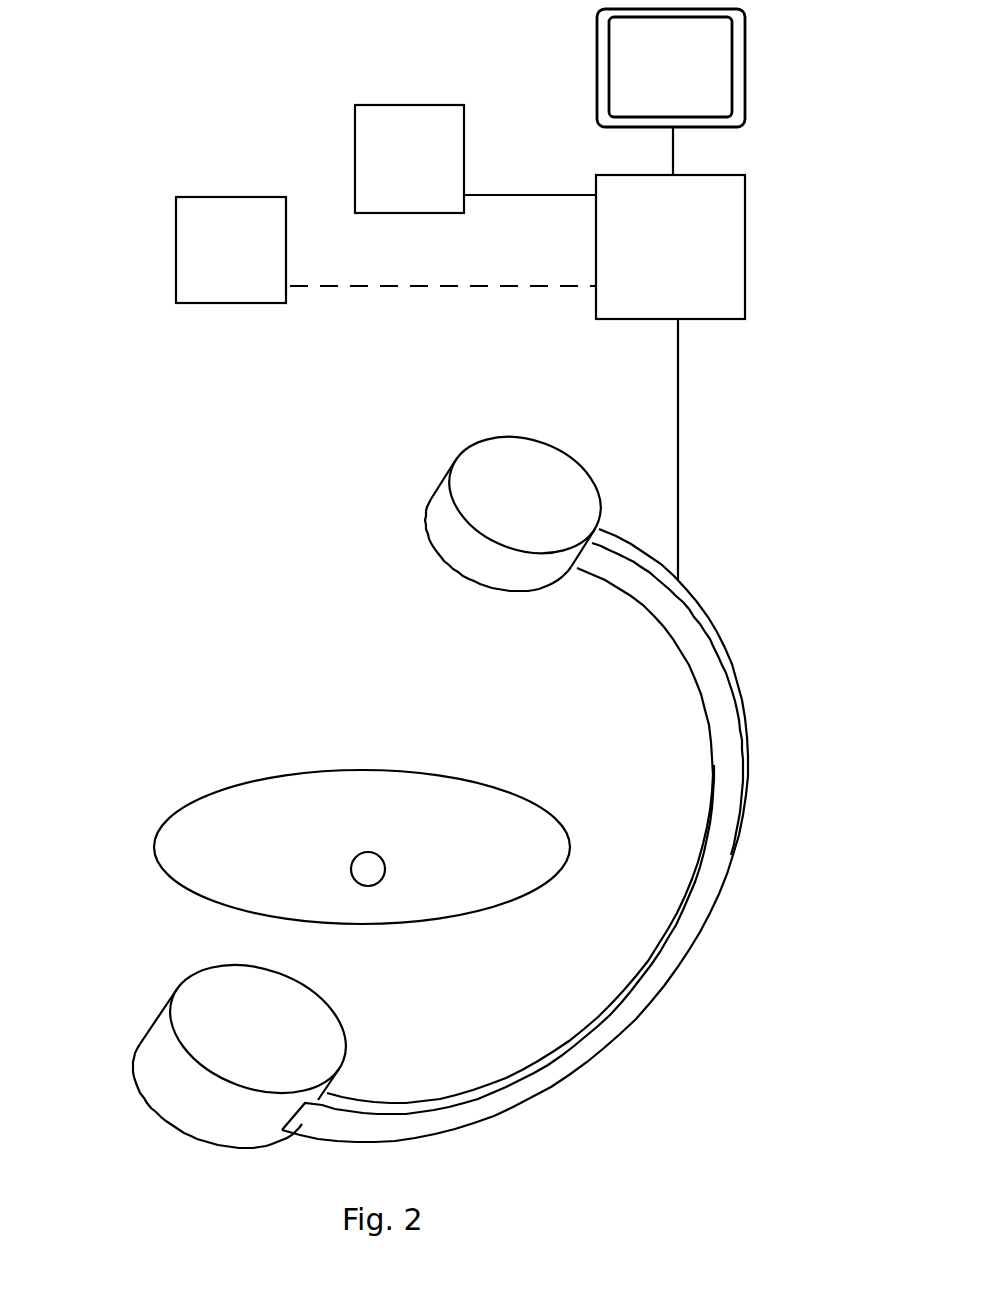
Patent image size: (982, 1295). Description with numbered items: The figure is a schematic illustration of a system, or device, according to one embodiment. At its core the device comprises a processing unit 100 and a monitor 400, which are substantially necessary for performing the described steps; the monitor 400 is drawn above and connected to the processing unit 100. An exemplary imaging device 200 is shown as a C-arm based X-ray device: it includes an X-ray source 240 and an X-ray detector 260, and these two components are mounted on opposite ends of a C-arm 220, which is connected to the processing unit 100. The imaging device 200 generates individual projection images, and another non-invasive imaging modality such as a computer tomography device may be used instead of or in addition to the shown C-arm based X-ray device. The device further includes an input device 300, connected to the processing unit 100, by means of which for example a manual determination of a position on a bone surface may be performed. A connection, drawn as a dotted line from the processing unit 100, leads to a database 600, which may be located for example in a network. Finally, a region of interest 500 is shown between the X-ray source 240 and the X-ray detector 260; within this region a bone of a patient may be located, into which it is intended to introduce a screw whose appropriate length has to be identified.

The processing unit 100 is at (718, 240).
The imaging device 200 is at (448, 810).
The C-arm 220 is at (593, 1047).
The X-ray source 240 is at (233, 1113).
The X-ray detector 260 is at (533, 580).
The input device 300 is at (389, 142).
The monitor 400 is at (718, 73).
The region of interest 500 is at (334, 891).
The database 600 is at (212, 233).